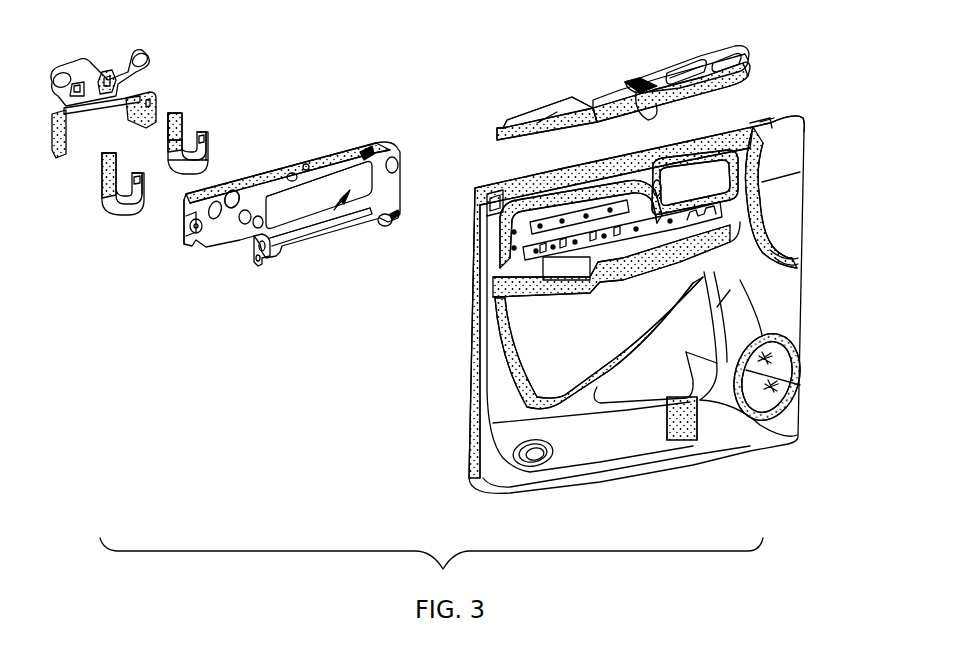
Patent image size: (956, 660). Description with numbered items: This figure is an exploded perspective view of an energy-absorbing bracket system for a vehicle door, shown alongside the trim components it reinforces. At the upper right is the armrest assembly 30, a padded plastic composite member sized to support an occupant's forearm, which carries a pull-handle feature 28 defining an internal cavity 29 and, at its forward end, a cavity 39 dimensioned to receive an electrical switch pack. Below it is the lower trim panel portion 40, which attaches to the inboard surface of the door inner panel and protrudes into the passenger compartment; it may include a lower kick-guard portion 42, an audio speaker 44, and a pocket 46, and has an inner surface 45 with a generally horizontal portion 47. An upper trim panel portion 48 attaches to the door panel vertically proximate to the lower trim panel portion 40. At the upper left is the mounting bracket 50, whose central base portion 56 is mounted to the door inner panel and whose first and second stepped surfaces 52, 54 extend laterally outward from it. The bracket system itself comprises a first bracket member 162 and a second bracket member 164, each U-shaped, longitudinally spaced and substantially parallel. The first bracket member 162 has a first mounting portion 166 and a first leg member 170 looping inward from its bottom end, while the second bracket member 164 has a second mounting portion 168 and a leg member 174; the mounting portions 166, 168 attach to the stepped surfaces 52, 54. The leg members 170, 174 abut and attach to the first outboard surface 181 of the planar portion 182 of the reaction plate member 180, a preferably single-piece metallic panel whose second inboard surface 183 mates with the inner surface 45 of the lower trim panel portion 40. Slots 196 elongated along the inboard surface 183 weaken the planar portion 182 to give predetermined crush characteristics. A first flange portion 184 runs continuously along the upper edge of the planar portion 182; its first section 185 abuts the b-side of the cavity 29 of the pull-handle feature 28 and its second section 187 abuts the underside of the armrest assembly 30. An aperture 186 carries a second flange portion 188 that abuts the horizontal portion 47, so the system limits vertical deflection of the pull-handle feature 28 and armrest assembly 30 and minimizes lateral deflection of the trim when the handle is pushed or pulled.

The pull-handle feature 28 is at (598, 98).
The cavity 29 is at (648, 84).
The armrest assembly 30 is at (554, 110).
The cavity 39 is at (728, 52).
The lower trim panel portion 40 is at (786, 293).
The lower kick-guard portion 42 is at (612, 442).
The audio speaker 44 is at (795, 390).
The inner surface 45 is at (726, 192).
The pocket 46 is at (634, 402).
The generally horizontal portion 47 is at (584, 278).
The upper trim panel portion 48 is at (806, 152).
The mounting bracket 50 is at (88, 64).
The first stepped surface 52 is at (56, 118).
The second stepped surface 54 is at (146, 96).
The central base portion 56 is at (110, 78).
The first bracket member 162 is at (114, 230).
The second bracket member 164 is at (180, 160).
The first mounting portion 166 is at (102, 170).
The second mounting portion 168 is at (178, 128).
The first leg member 170 is at (142, 200).
The leg member 174 is at (206, 134).
The reaction plate member 180 is at (250, 246).
The first outboard surface 181 is at (334, 210).
The planar portion 182 is at (234, 190).
The second inboard surface 183 is at (392, 226).
The first flange portion 184 is at (330, 168).
The first section 185 is at (370, 146).
The aperture 186 is at (394, 150).
The second section 187 is at (214, 230).
The second flange portion 188 is at (308, 208).
The slots 196 is at (312, 180).